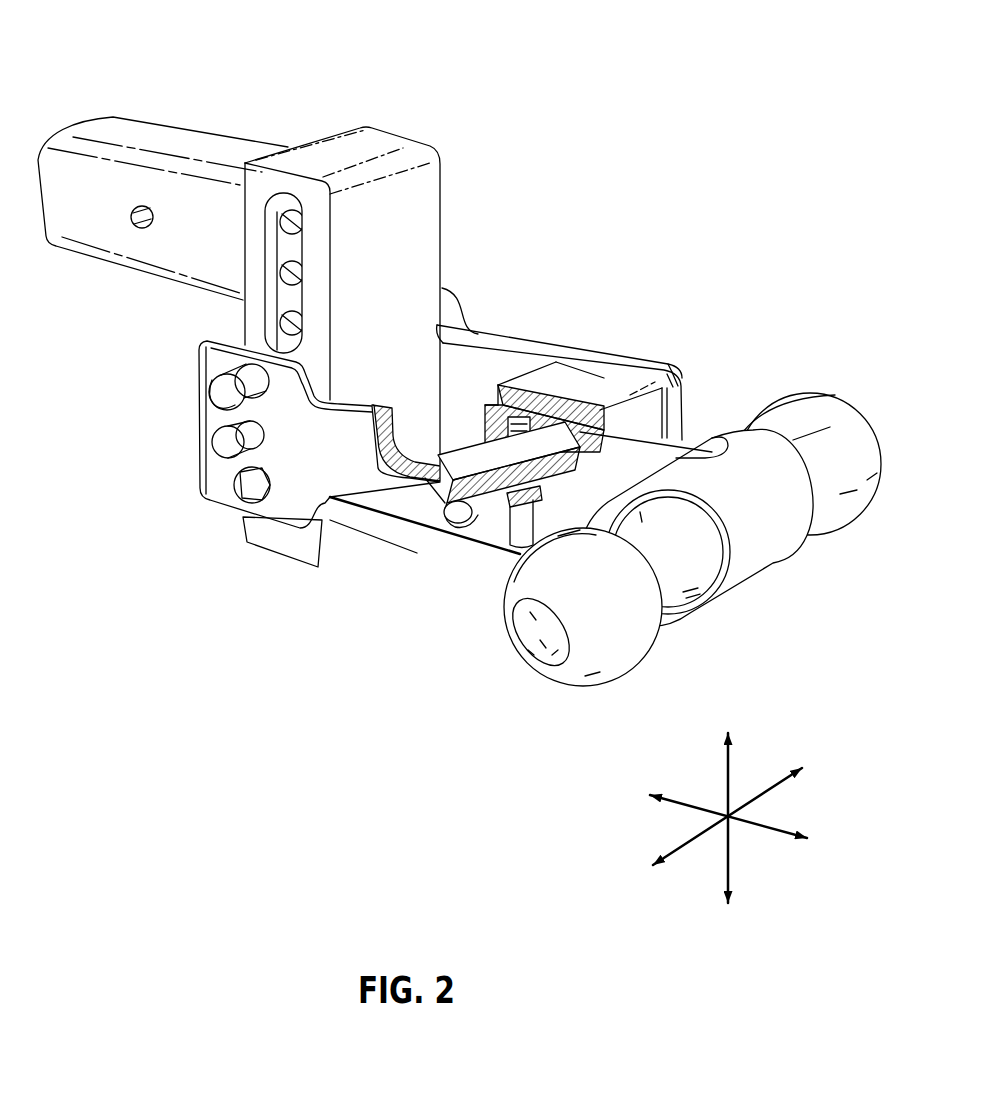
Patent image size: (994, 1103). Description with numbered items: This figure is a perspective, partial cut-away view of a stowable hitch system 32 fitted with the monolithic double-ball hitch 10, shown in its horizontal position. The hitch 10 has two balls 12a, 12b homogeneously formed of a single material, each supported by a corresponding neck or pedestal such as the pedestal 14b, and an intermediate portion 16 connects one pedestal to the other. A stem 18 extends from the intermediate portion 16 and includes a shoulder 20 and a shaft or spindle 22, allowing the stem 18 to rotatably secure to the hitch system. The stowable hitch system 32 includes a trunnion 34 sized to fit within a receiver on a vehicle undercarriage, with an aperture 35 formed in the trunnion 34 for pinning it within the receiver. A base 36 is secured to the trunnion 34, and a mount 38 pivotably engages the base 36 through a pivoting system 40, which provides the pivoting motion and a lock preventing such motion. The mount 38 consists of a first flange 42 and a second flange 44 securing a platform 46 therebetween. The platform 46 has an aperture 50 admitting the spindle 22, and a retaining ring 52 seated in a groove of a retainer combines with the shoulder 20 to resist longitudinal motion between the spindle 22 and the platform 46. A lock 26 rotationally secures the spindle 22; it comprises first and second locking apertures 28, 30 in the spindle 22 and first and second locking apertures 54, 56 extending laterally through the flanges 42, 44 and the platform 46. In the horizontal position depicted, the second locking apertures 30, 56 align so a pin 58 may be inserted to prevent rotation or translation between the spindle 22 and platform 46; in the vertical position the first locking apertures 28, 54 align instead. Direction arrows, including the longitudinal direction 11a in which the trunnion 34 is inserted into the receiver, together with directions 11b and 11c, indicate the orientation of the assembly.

The hitch 10 is at (851, 362).
The longitudinal direction 11a is at (782, 835).
The second axis direction 11b is at (778, 790).
The third axis direction 11c is at (733, 763).
The ball 12a is at (827, 493).
The ball 12b is at (603, 658).
The pedestal 14b is at (670, 575).
The intermediate portion 16 is at (762, 562).
The stem 18 is at (684, 378).
The shoulder 20 is at (684, 458).
The spindle 22 is at (648, 418).
The lock 26 is at (472, 541).
The first locking aperture 28 is at (497, 428).
The second locking aperture 30 is at (546, 396).
The stowable hitch system 32 is at (655, 107).
The trunnion 34 is at (147, 122).
The aperture 35 is at (141, 232).
The base 36 is at (432, 215).
The mount 38 is at (566, 332).
The pivoting system 40 is at (198, 423).
The first flange 42 is at (290, 506).
The second flange 44 is at (479, 330).
The platform 46 is at (577, 387).
The aperture 50 is at (537, 402).
The retaining ring 52 is at (494, 402).
The first locking aperture 54 is at (416, 491).
The second locking aperture 56 is at (507, 519).
The pin 58 is at (438, 505).